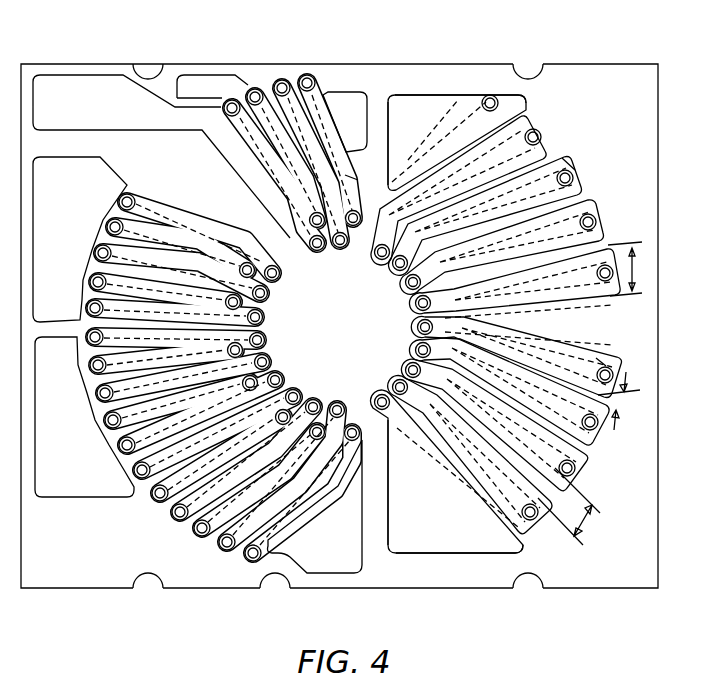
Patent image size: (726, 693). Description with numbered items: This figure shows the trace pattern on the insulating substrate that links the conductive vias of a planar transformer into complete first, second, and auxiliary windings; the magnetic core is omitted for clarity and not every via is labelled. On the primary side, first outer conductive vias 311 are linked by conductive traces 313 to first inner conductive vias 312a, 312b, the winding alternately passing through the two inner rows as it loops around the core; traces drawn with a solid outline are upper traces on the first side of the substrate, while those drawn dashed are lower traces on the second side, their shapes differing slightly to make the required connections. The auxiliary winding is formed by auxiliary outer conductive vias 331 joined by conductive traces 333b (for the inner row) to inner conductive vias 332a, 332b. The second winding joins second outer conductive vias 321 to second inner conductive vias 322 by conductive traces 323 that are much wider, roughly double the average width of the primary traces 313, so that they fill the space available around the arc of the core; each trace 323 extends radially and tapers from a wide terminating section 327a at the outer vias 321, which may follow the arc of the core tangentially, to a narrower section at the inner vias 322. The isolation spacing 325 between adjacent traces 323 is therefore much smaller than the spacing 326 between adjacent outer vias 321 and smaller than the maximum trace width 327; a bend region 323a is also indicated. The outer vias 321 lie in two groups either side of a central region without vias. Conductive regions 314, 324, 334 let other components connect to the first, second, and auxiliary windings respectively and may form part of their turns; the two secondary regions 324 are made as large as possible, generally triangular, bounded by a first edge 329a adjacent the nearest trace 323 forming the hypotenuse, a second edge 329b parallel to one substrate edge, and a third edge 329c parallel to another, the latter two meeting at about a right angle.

The first outer conductive vias 311 is at (77, 330).
The first inner conductive vias 312a is at (270, 300).
The first inner conductive vias 312b is at (270, 378).
The conductive traces 313 is at (198, 226).
The conductive regions 314 is at (110, 175).
The second outer conductive vias 321 is at (598, 218).
The second inner conductive vias 322 is at (417, 327).
The conductive traces 323 is at (440, 569).
The trace bend portion 323a is at (357, 175).
The conductive regions 324 is at (470, 106).
The spacing 325 is at (636, 395).
The spacing between adjacent outer conductive connectors 326 is at (600, 515).
The maximum widths 327 is at (648, 265).
The wide terminating section 327a is at (567, 165).
The first edge 329a is at (432, 160).
The second edge 329b is at (520, 94).
The third edge 329c is at (390, 118).
The auxiliary outer conductive vias 331 is at (237, 99).
The inner conductive vias 332a is at (358, 245).
The inner conductive vias 332b is at (340, 251).
The conductive traces 333b is at (322, 252).
The conductive regions 334 is at (67, 84).